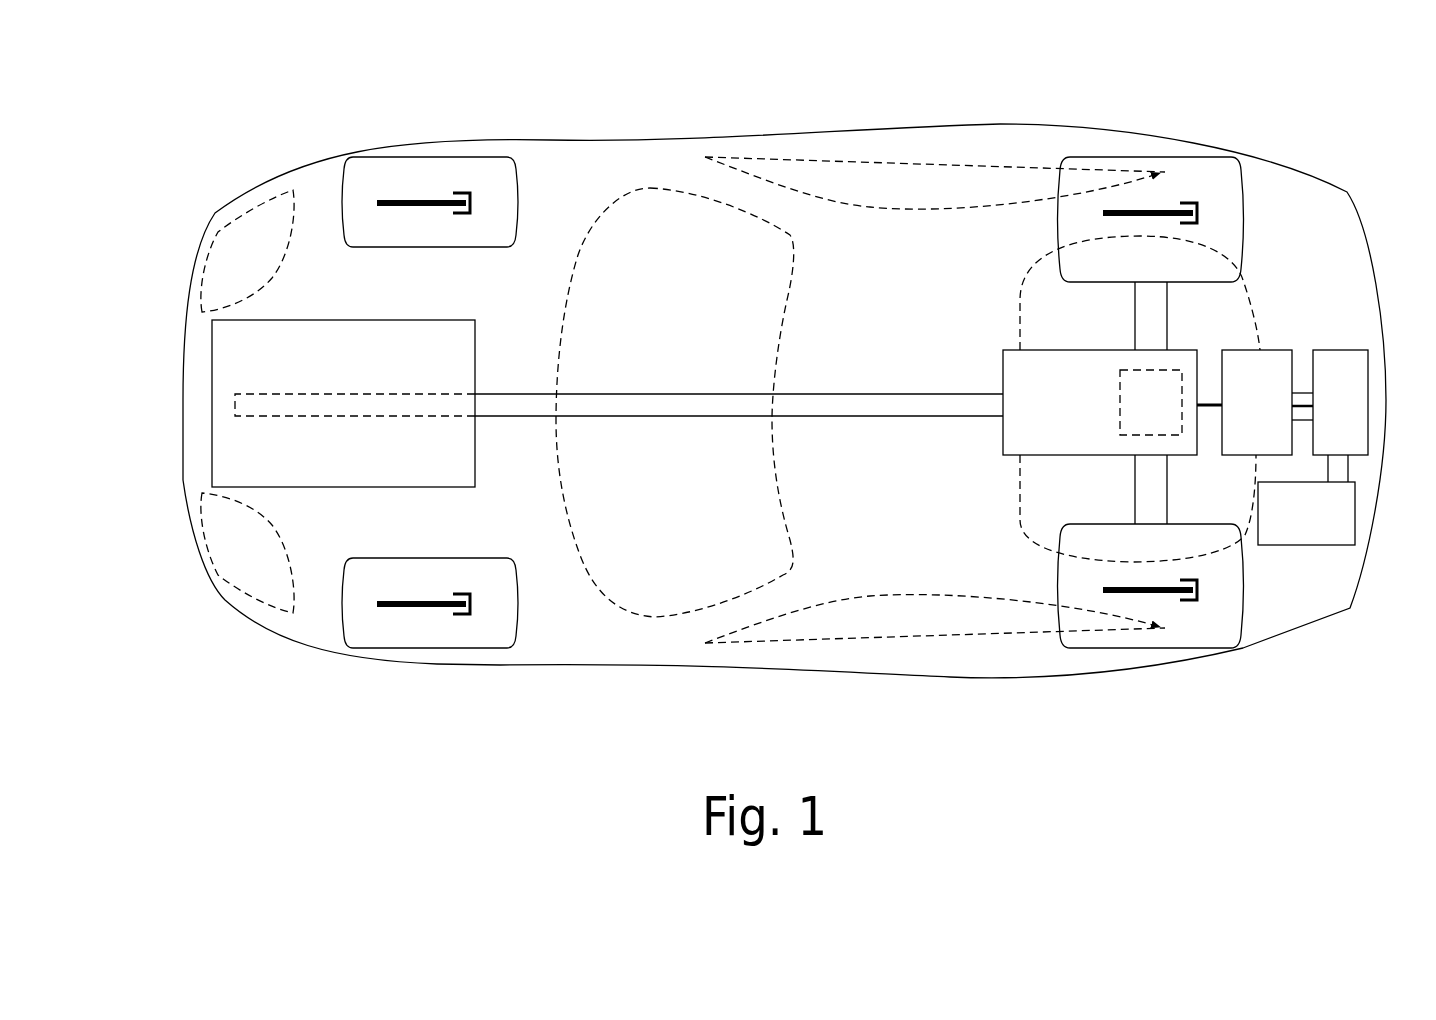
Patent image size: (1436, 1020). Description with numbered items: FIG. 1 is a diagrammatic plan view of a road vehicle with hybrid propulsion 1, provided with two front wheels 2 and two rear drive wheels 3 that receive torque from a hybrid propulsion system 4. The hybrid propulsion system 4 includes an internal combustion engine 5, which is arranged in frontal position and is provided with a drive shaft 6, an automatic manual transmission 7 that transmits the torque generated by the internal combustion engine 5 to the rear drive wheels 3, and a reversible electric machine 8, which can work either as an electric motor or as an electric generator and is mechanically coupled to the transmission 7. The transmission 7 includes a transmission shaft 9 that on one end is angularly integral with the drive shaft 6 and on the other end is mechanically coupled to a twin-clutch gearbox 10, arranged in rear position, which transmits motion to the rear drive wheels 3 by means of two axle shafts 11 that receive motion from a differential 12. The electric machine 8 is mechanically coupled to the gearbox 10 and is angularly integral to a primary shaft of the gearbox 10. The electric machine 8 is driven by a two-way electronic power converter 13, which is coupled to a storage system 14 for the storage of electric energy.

The road vehicle with hybrid propulsion 1 is at (786, 404).
The front wheels 2 is at (365, 175).
The rear drive wheels 3 is at (1228, 175).
The hybrid propulsion system 4 is at (263, 168).
The internal combustion engine 5 is at (220, 345).
The drive shaft 6 is at (333, 400).
The automatic manual transmission 7 is at (810, 117).
The reversible electric machine 8 is at (1244, 402).
The transmission shaft 9 is at (830, 405).
The twin-clutch gearbox 10 is at (1100, 402).
The axle shafts 11 is at (1148, 306).
The differential 12 is at (1151, 402).
The two-way electronic power converter 13 is at (1330, 402).
The storage system 14 is at (1306, 500).